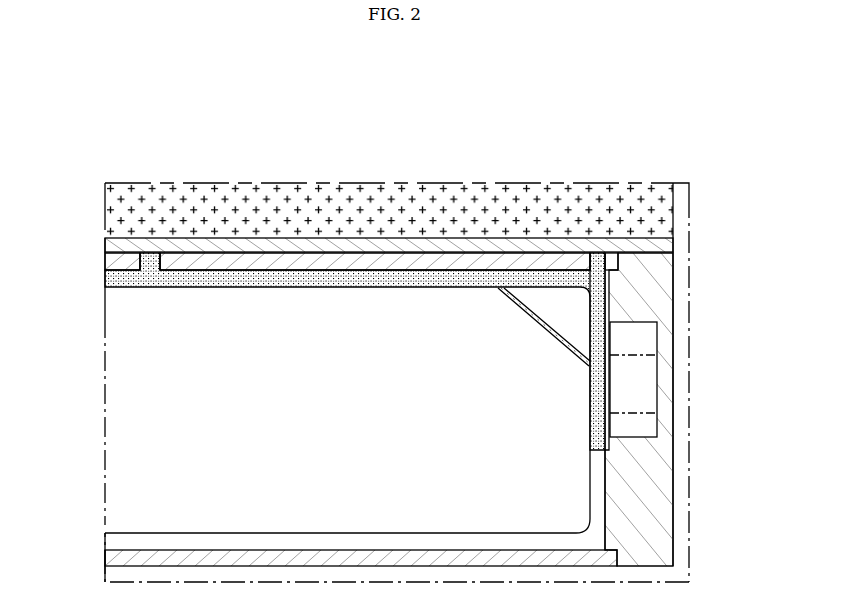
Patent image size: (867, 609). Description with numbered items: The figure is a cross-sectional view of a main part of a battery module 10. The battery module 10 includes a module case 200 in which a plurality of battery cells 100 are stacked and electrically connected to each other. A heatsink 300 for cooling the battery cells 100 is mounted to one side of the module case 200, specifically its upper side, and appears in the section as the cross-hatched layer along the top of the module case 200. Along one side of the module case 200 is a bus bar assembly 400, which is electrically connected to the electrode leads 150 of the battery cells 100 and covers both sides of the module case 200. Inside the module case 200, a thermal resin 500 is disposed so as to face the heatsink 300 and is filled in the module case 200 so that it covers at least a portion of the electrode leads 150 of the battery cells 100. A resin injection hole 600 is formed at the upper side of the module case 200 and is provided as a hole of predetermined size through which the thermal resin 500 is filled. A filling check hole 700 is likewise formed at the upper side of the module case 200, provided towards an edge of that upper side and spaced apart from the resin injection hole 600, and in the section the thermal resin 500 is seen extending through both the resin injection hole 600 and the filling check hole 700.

The battery module 10 is at (200, 131).
The battery cell 100 is at (110, 419).
The electrode lead 150 is at (645, 378).
The module case 200 is at (107, 257).
The heatsink 300 is at (688, 200).
The bus bar assembly 400 is at (681, 418).
The thermal resin 500 is at (107, 281).
The resin injection hole 600 is at (149, 253).
The filling check hole 700 is at (597, 253).